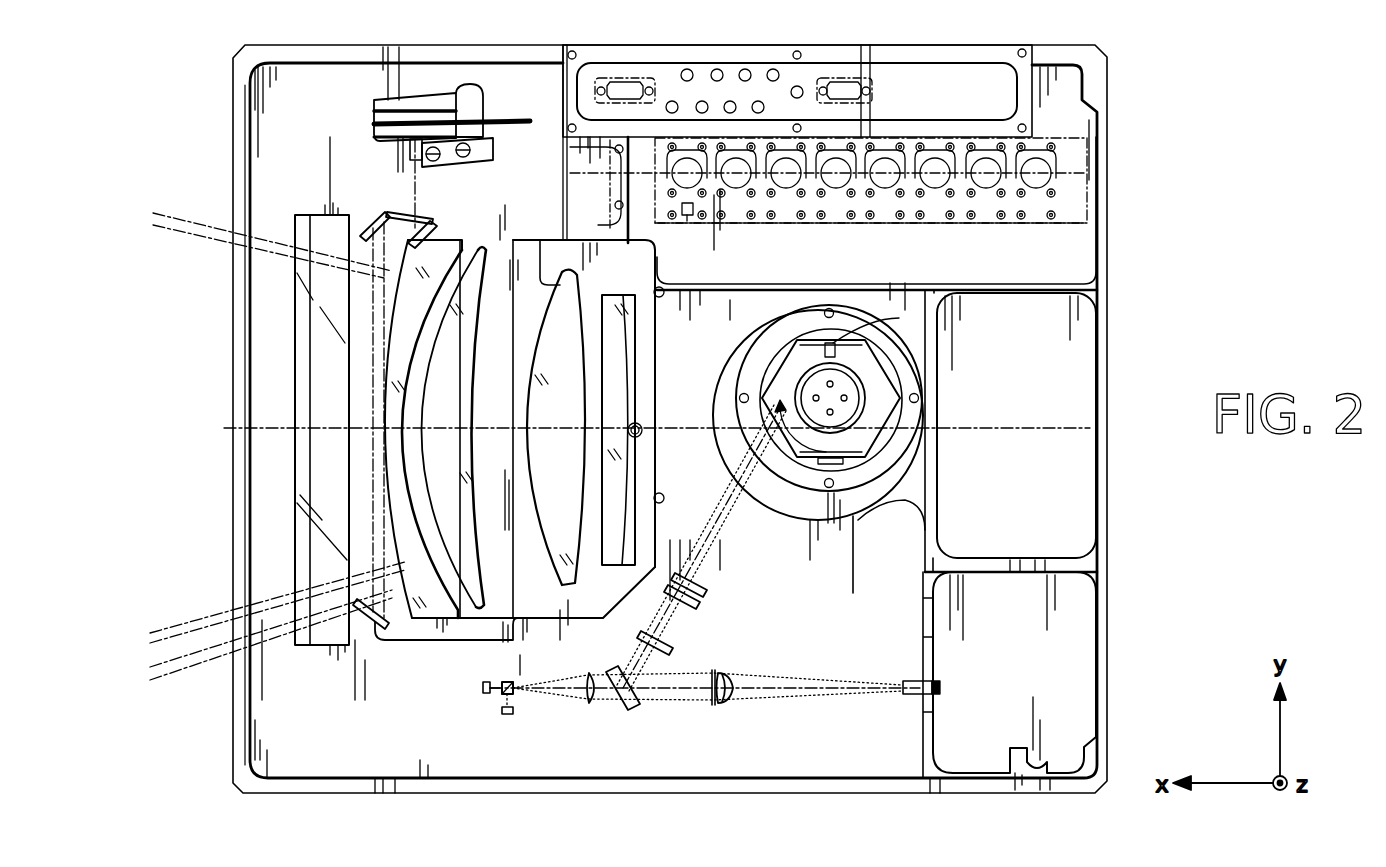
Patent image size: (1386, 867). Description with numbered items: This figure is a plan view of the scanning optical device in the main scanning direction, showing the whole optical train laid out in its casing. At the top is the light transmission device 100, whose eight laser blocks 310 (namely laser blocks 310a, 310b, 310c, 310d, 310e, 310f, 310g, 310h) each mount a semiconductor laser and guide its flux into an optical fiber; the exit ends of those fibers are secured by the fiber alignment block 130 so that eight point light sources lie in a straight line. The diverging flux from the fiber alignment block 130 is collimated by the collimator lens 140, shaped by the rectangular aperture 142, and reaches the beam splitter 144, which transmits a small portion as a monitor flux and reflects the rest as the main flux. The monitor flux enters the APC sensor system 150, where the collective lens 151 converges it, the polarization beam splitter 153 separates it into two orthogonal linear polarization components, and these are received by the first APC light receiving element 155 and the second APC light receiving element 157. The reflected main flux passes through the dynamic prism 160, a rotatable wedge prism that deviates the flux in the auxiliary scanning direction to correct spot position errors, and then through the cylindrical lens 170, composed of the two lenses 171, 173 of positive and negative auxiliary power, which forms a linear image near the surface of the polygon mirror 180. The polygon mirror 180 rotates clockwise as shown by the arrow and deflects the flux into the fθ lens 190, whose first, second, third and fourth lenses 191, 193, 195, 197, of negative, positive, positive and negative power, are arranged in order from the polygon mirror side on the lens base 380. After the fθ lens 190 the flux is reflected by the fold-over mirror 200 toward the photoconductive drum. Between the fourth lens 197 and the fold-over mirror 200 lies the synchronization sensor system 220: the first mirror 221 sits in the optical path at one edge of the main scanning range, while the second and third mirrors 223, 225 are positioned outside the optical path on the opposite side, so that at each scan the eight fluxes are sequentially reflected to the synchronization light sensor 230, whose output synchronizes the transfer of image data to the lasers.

The light transmission device 100 is at (1137, 192).
The fiber alignment block 130 is at (930, 686).
The collimator lens 140 is at (728, 703).
The aperture 142 is at (709, 706).
The beam splitter 144 is at (634, 706).
The automatic power control (APC) sensor system 150 is at (592, 749).
The collective lens 151 is at (593, 703).
The polarization beam splitter 153 is at (503, 714).
The first APC light receiving element 155 is at (481, 690).
The second APC light receiving element 157 is at (513, 694).
The dynamic prism 160 is at (668, 648).
The cylindrical lens 170 is at (829, 453).
The lens 171 is at (694, 604).
The lens 173 is at (698, 582).
The polygon mirror 180 is at (883, 424).
The fθ lens 190 is at (519, 389).
The first lens 191 is at (597, 372).
The second lens 193 is at (562, 272).
The third lens 195 is at (478, 245).
The fourth lens 197 is at (430, 242).
The fold-over mirror 200 is at (343, 647).
The synchronization sensor system 220 is at (178, 268).
The first mirror 221 is at (358, 612).
The second mirror 223 is at (365, 242).
The third mirror 225 is at (410, 238).
The synchronization light sensor 230 is at (377, 140).
The laser block 310 is at (870, 198).
The laser block 310a is at (706, 188).
The laser block 310b is at (736, 197).
The laser block 310c is at (784, 190).
The laser block 310d is at (834, 197).
The laser block 310e is at (881, 190).
The laser block 310f is at (930, 197).
The laser block 310g is at (981, 190).
The laser block 310h is at (1032, 197).
The lens base 380 is at (657, 372).